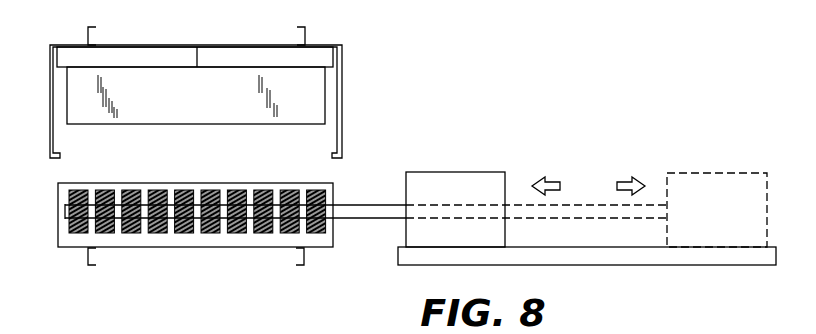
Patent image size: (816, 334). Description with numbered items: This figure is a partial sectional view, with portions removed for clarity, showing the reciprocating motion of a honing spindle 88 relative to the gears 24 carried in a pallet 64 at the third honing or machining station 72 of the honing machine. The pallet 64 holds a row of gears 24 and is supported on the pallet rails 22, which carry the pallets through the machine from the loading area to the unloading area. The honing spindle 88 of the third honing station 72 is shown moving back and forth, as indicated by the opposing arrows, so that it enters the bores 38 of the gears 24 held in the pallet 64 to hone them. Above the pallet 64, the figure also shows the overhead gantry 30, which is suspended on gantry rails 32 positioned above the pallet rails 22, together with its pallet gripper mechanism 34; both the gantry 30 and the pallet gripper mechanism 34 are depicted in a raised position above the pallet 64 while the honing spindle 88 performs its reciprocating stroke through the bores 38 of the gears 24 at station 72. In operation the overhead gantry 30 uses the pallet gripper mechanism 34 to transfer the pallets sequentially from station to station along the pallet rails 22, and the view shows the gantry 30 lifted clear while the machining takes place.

The pallet rails 22 is at (86, 253).
The gears 24 is at (238, 190).
The overhead gantry 30 is at (183, 109).
The gantry rails 32 is at (93, 36).
The pallet gripper mechanism 34 is at (60, 143).
The bores 38 is at (70, 222).
The pallet 64 is at (58, 190).
The third honing station 72 is at (208, 293).
The honing spindle 88 is at (468, 172).